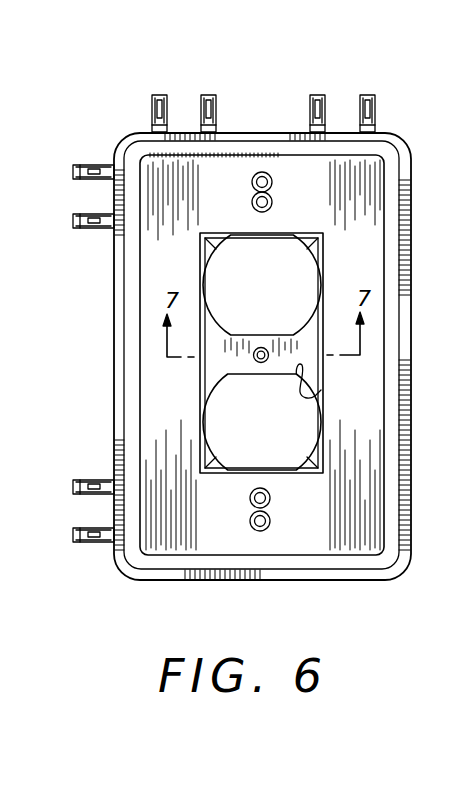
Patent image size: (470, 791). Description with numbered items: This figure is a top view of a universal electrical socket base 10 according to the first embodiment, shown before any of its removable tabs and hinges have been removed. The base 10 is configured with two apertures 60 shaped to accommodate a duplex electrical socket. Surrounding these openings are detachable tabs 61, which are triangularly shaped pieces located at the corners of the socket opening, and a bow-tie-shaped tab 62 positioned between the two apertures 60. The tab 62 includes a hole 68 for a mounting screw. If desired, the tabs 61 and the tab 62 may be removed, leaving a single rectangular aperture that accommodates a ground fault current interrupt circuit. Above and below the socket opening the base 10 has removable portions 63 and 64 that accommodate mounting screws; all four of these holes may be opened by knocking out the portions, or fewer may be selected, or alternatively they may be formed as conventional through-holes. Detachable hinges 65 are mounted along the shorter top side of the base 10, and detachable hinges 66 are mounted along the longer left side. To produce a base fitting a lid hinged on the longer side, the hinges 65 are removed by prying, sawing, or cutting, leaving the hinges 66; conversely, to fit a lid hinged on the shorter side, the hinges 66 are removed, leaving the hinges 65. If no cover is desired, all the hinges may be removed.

The base 10 is at (373, 167).
The apertures 60 is at (310, 283).
The detachable tabs 61 is at (318, 246).
The tab 62 is at (317, 397).
The removable portions 63 is at (273, 186).
The removable portions 64 is at (250, 518).
The detachable hinges 65 is at (143, 90).
The detachable hinges 66 is at (73, 155).
The hole 68 is at (262, 347).